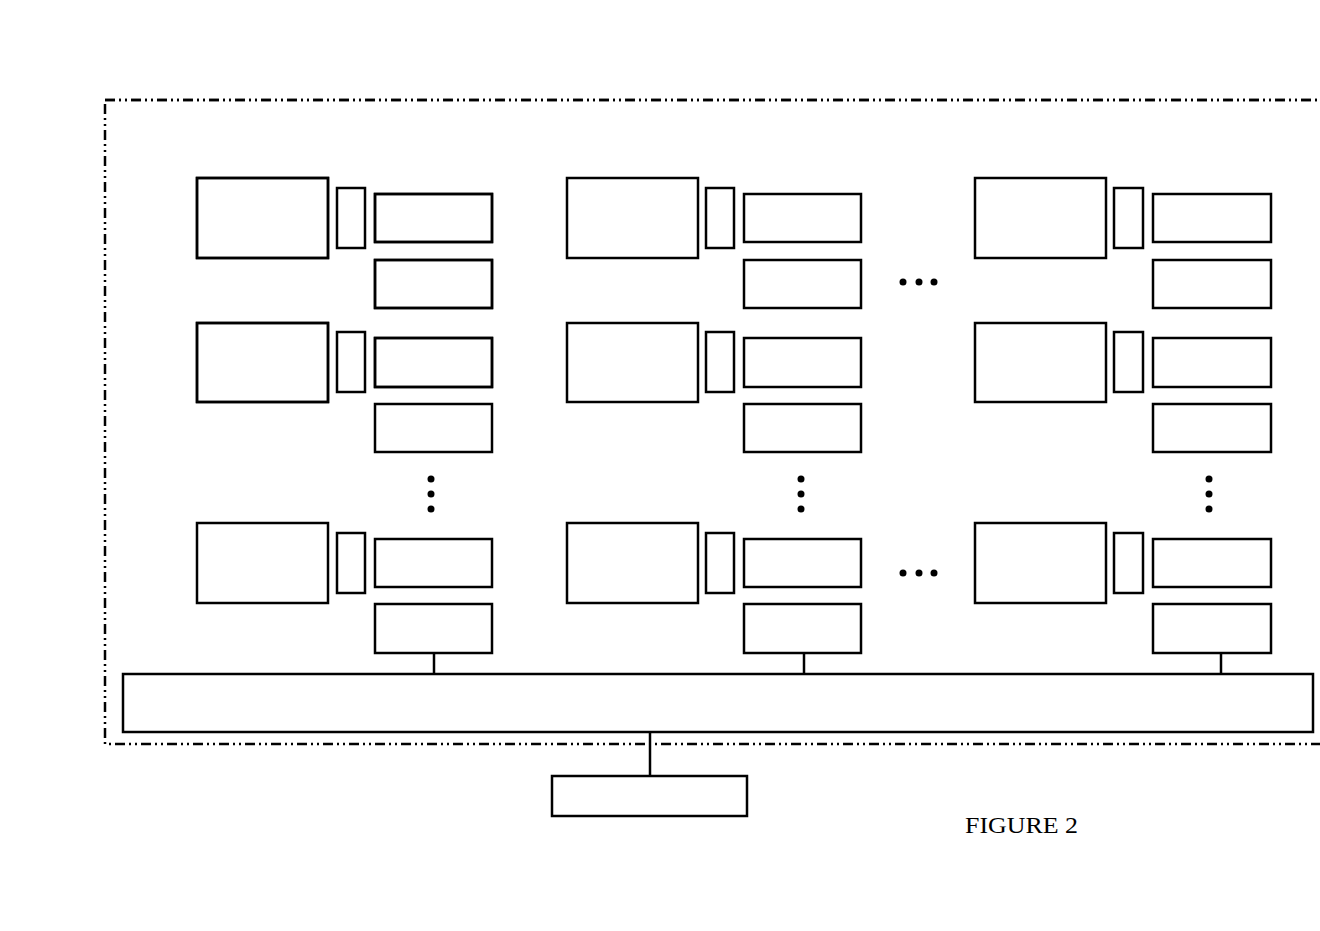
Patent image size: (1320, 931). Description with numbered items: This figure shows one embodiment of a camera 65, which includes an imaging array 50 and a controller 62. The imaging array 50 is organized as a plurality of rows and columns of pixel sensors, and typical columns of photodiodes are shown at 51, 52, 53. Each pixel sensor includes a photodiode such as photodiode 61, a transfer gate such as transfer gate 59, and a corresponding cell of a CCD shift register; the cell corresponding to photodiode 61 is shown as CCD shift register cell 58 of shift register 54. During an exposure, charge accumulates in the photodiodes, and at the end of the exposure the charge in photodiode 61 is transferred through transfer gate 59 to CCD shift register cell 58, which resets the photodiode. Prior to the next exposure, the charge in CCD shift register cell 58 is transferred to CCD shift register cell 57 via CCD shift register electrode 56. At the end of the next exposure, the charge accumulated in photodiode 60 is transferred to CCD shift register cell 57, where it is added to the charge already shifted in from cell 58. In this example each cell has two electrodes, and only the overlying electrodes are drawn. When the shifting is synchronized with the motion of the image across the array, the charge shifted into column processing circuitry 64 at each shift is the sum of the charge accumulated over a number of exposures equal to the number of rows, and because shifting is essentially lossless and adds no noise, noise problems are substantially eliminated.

The camera 65 is at (115, 90).
The imaging array 50 is at (771, 100).
The column of photodiodes 51 is at (247, 172).
The column of photodiodes 52 is at (631, 172).
The column of photodiodes 53 is at (1040, 172).
The shift register 54 is at (421, 172).
The transfer gate 59 is at (352, 198).
The CCD shift register cell 58 is at (472, 200).
The CCD shift register electrode 56 is at (488, 300).
The CCD shift register cell 57 is at (482, 366).
The photodiode 61 is at (208, 218).
The photodiode 60 is at (226, 360).
The column processing circuitry 64 is at (932, 682).
The controller 62 is at (748, 798).